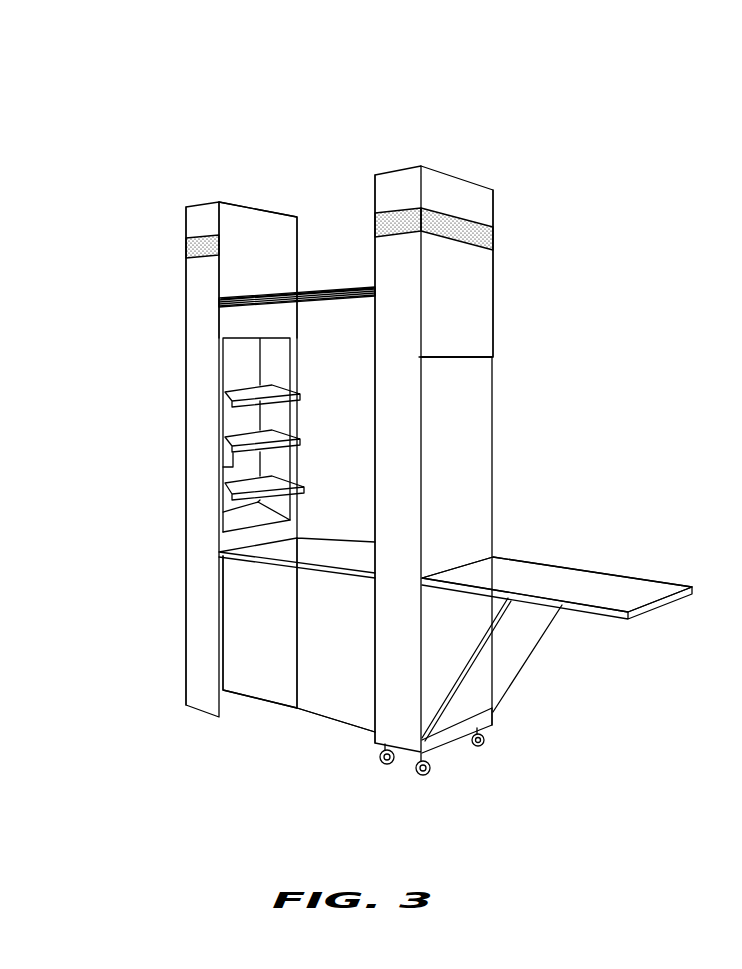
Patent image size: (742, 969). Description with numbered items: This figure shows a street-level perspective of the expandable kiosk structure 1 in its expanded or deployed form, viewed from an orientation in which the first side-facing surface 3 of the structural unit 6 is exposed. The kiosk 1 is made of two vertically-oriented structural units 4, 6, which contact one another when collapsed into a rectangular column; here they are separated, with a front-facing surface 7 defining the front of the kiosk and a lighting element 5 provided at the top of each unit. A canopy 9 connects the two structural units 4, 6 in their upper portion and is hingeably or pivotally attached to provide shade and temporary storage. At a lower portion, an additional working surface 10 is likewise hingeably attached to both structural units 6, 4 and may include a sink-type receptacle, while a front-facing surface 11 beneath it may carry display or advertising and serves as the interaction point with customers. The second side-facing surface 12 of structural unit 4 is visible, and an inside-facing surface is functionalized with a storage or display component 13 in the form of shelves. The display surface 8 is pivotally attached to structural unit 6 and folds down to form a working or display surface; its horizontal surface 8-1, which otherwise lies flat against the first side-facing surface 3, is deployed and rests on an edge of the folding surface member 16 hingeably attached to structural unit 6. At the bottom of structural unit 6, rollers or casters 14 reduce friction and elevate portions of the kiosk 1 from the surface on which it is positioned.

The kiosk structure 1 is at (147, 165).
The first side-facing surface 3 is at (478, 296).
The structural unit 4 is at (221, 177).
The lighting element 5 is at (186, 244).
The structural unit 6 is at (470, 160).
The front-facing surface 7 is at (400, 355).
The display surface 8 is at (604, 640).
The horizontal surface 8-1 is at (610, 560).
The canopy 9 is at (321, 288).
The working surface 10 is at (297, 549).
The front-facing surface 11 is at (318, 690).
The second side-facing surface 12 is at (260, 253).
The storage or display component 13 is at (186, 398).
The casters 14 is at (398, 776).
The folding surface member 16 is at (511, 657).